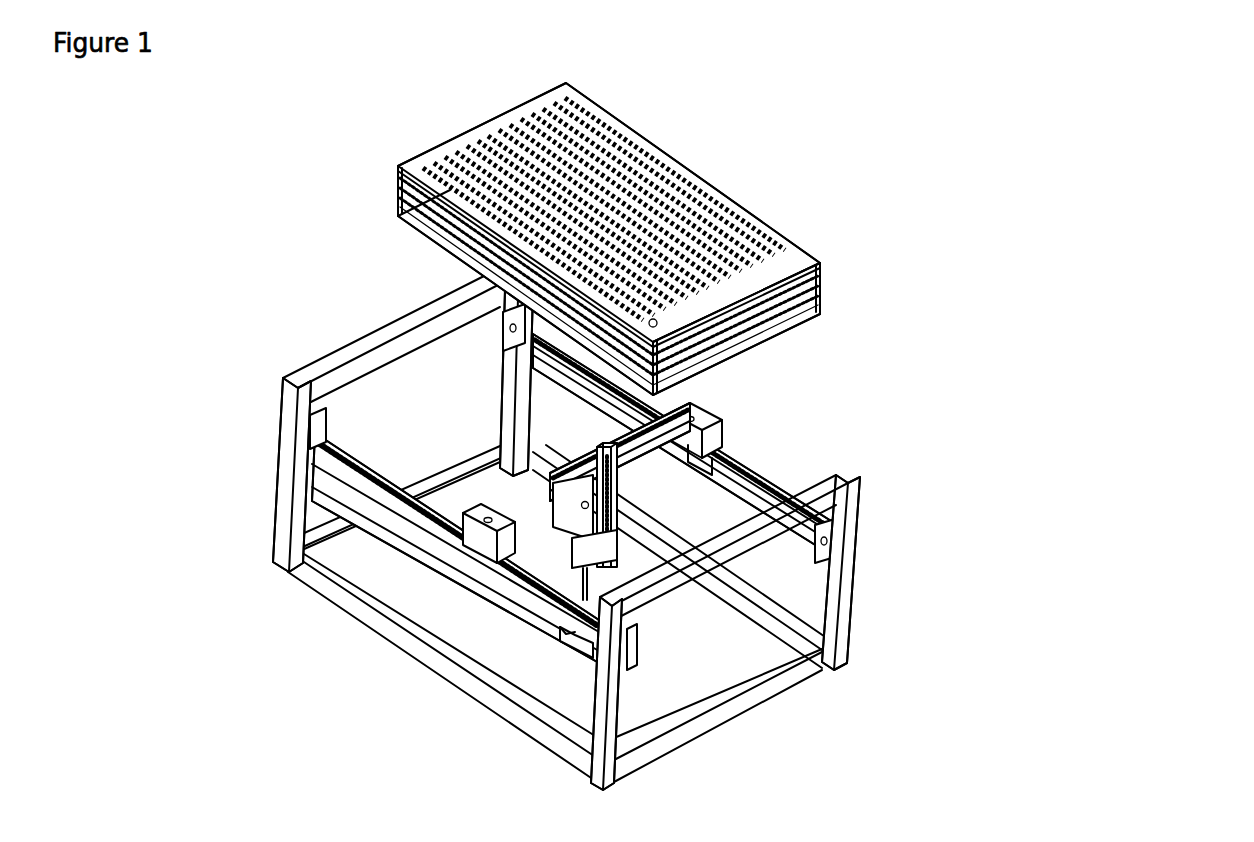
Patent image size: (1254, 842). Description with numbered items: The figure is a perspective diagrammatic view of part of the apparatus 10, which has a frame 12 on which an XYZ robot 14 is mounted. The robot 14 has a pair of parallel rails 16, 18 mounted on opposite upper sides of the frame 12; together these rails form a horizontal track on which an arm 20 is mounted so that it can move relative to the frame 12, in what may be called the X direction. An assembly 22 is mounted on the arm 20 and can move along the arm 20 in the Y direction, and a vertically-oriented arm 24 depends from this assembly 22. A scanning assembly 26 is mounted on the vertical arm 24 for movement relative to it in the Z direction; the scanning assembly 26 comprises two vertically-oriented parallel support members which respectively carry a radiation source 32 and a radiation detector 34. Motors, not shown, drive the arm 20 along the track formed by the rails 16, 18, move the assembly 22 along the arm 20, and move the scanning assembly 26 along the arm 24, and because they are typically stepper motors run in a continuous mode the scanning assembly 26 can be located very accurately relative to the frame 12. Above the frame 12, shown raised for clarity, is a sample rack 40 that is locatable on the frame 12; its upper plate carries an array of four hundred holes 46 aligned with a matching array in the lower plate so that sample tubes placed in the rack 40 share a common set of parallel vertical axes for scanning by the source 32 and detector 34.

The apparatus 10 is at (997, 535).
The frame 12 is at (710, 713).
The XYZ robot 14 is at (740, 420).
The rail 16 is at (343, 468).
The rail 18 is at (550, 362).
The arm 20 is at (540, 525).
The assembly 22 is at (575, 485).
The vertically-oriented arm 24 is at (603, 594).
The scanning assembly 26 is at (843, 496).
The radiation source 32 is at (612, 458).
The radiation detector 34 is at (823, 569).
The sample rack 40 is at (763, 351).
The holes 46 is at (603, 123).